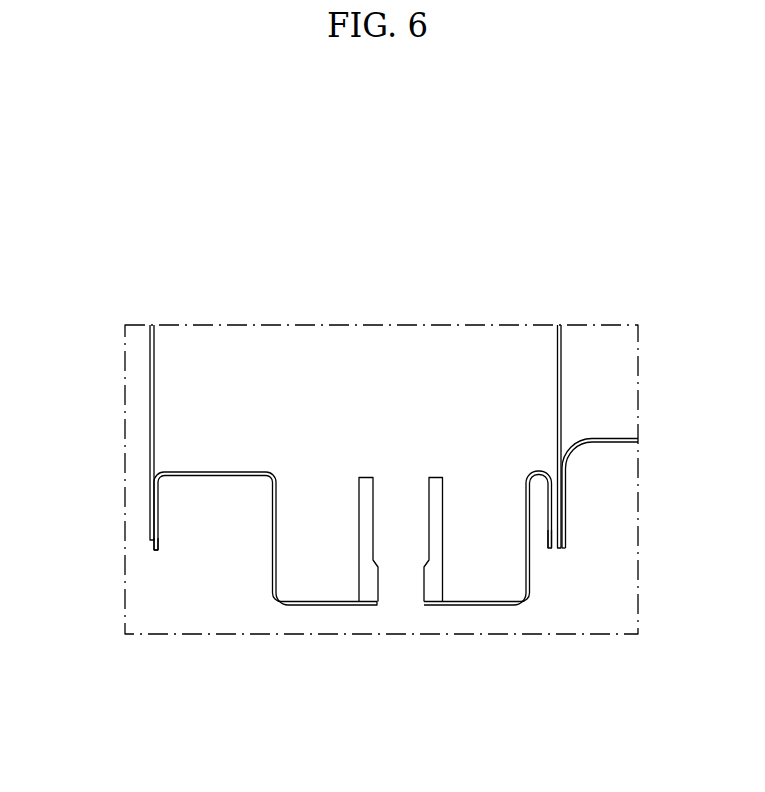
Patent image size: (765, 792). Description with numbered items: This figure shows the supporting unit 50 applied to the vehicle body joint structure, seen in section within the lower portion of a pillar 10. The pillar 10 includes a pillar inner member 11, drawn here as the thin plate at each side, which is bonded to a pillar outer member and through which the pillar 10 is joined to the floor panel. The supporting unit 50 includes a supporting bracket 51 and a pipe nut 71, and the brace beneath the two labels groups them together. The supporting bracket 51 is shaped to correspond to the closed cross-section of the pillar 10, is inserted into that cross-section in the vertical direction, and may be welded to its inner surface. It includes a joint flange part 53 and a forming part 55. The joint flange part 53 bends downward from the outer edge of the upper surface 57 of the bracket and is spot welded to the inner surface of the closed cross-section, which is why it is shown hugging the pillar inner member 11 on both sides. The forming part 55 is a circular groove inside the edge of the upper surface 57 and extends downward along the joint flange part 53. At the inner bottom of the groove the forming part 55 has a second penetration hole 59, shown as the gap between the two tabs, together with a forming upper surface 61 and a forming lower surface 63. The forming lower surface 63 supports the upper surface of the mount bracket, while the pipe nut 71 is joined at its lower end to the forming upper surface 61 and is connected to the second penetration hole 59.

The pillar 10 is at (136, 357).
The pillar inner member 11 is at (149, 395).
The supporting unit 50 is at (340, 699).
The supporting bracket 51 is at (272, 619).
The joint flange part 53 is at (158, 534).
The forming part 55 is at (274, 564).
The upper surface of the bracket 57 is at (199, 460).
The second penetration hole 59 is at (402, 617).
The forming upper surface 61 is at (477, 602).
The forming lower surface 63 is at (456, 605).
The pipe nut 71 is at (346, 567).